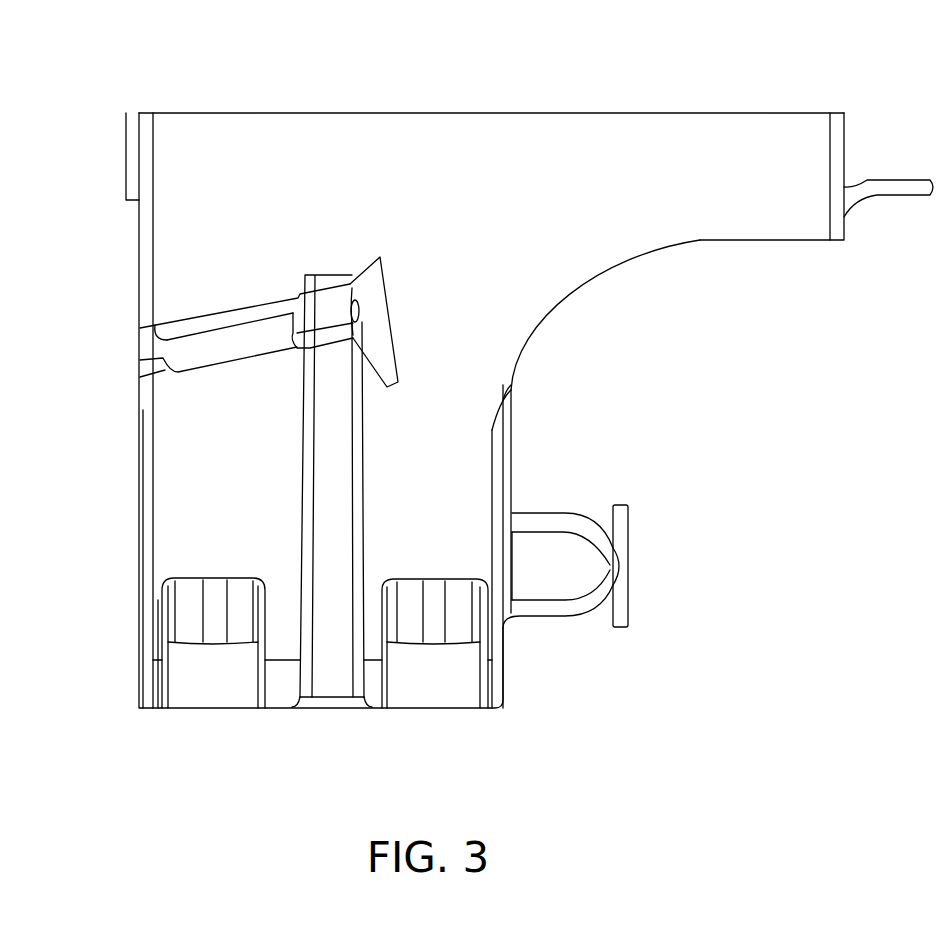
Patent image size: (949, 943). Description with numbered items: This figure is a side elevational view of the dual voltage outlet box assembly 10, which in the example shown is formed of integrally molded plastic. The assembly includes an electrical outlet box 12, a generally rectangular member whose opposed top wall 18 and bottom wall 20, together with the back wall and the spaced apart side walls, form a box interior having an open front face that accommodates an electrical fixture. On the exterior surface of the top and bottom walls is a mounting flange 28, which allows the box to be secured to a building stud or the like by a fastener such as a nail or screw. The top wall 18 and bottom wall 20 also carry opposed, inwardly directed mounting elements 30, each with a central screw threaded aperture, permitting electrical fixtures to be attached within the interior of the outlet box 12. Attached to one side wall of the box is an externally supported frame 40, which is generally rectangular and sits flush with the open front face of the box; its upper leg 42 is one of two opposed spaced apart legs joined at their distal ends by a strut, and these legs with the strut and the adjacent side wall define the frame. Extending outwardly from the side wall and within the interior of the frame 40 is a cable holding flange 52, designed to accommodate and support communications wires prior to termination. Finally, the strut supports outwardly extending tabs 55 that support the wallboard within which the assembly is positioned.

The outlet box assembly 10 is at (581, 91).
The electrical outlet box 12 is at (130, 495).
The top wall 18 is at (455, 492).
The bottom wall 20 is at (432, 685).
The mounting flange 28 is at (210, 348).
The mounting element 30 is at (327, 677).
The externally supported frame 40 is at (768, 112).
The upper leg 42 is at (703, 219).
The cable holding flange 52 is at (629, 527).
The tab 55 is at (910, 182).